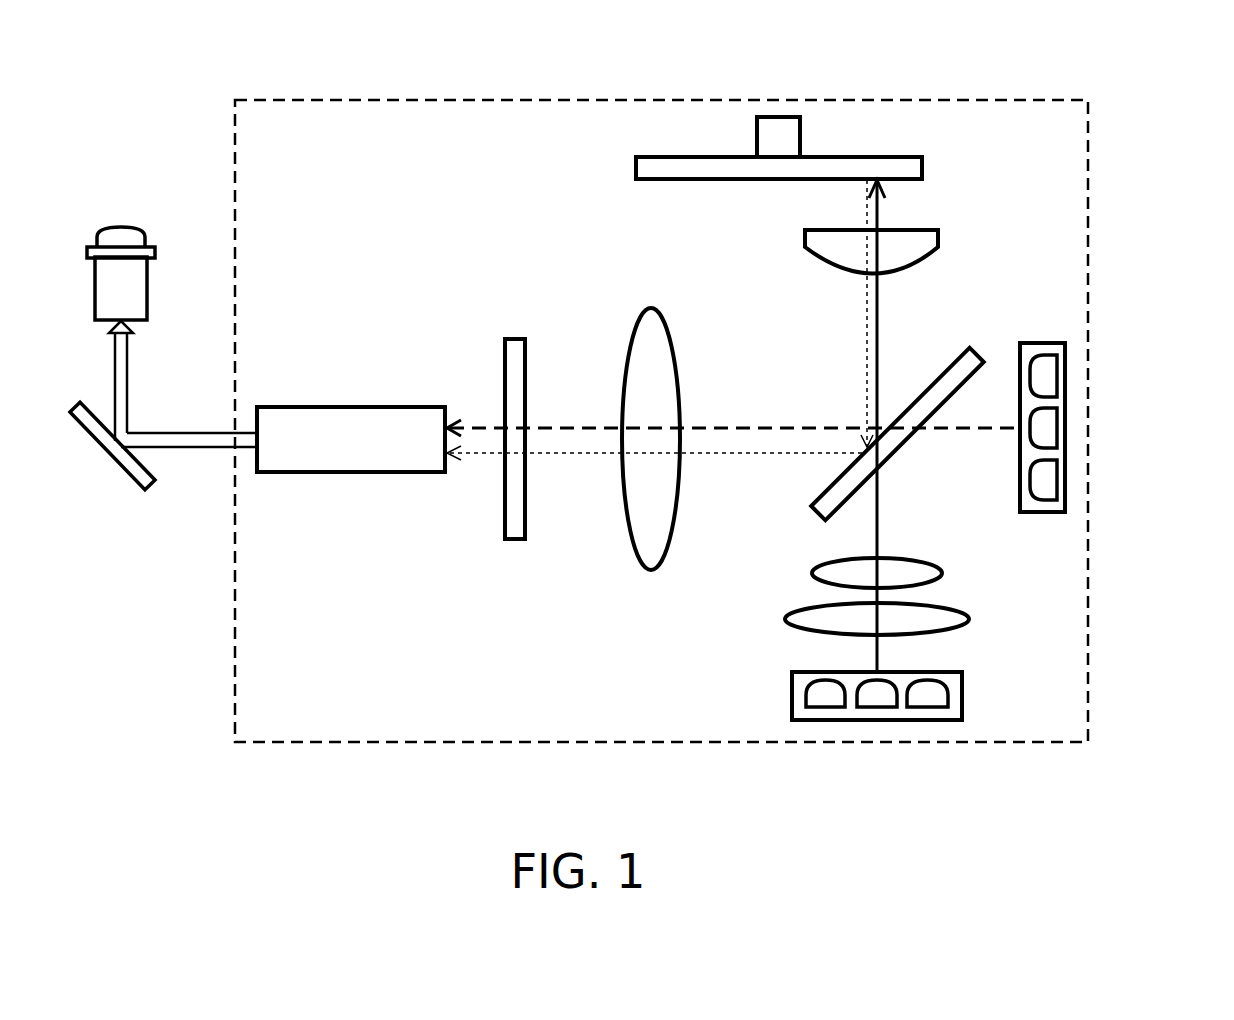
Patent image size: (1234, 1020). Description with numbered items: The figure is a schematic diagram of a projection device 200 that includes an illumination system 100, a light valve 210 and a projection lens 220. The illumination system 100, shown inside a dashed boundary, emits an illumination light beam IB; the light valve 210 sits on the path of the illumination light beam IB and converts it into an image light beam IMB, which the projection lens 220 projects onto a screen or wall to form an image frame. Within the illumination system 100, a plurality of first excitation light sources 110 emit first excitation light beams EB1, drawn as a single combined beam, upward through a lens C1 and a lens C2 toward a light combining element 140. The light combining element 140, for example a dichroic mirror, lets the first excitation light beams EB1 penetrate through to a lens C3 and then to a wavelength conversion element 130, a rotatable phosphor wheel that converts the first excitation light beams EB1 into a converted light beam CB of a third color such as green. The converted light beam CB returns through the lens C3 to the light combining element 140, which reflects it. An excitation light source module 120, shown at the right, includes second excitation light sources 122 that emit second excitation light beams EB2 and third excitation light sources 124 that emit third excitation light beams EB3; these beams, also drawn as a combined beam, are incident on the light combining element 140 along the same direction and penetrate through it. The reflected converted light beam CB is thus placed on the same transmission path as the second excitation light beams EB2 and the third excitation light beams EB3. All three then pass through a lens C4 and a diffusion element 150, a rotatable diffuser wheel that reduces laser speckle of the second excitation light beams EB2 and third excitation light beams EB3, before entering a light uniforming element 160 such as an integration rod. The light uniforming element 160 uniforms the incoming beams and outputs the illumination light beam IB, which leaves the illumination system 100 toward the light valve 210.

The illumination system 100 is at (975, 98).
The first excitation light sources 110 is at (929, 698).
The excitation light source module 120 is at (1121, 427).
The second excitation light sources 122 is at (1045, 427).
The third excitation light sources 124 is at (1045, 375).
The wavelength conversion element 130 is at (652, 165).
The light combining element 140 is at (953, 380).
The diffusion element 150 is at (515, 532).
The light uniforming element 160 is at (350, 455).
The projection device 200 is at (1165, 795).
The light valve 210 is at (118, 450).
The projection lens 220 is at (105, 290).
The lens C1 is at (800, 618).
The lens C2 is at (820, 572).
The lens C3 is at (810, 238).
The lens C4 is at (640, 535).
The converted light beam CB is at (866, 345).
The first excitation light beams EB1 is at (875, 657).
The second excitation light beams EB2 is at (977, 430).
The third excitation light beams EB3 is at (732, 474).
The illumination light beam IB is at (193, 440).
The image light beam IMB is at (122, 362).